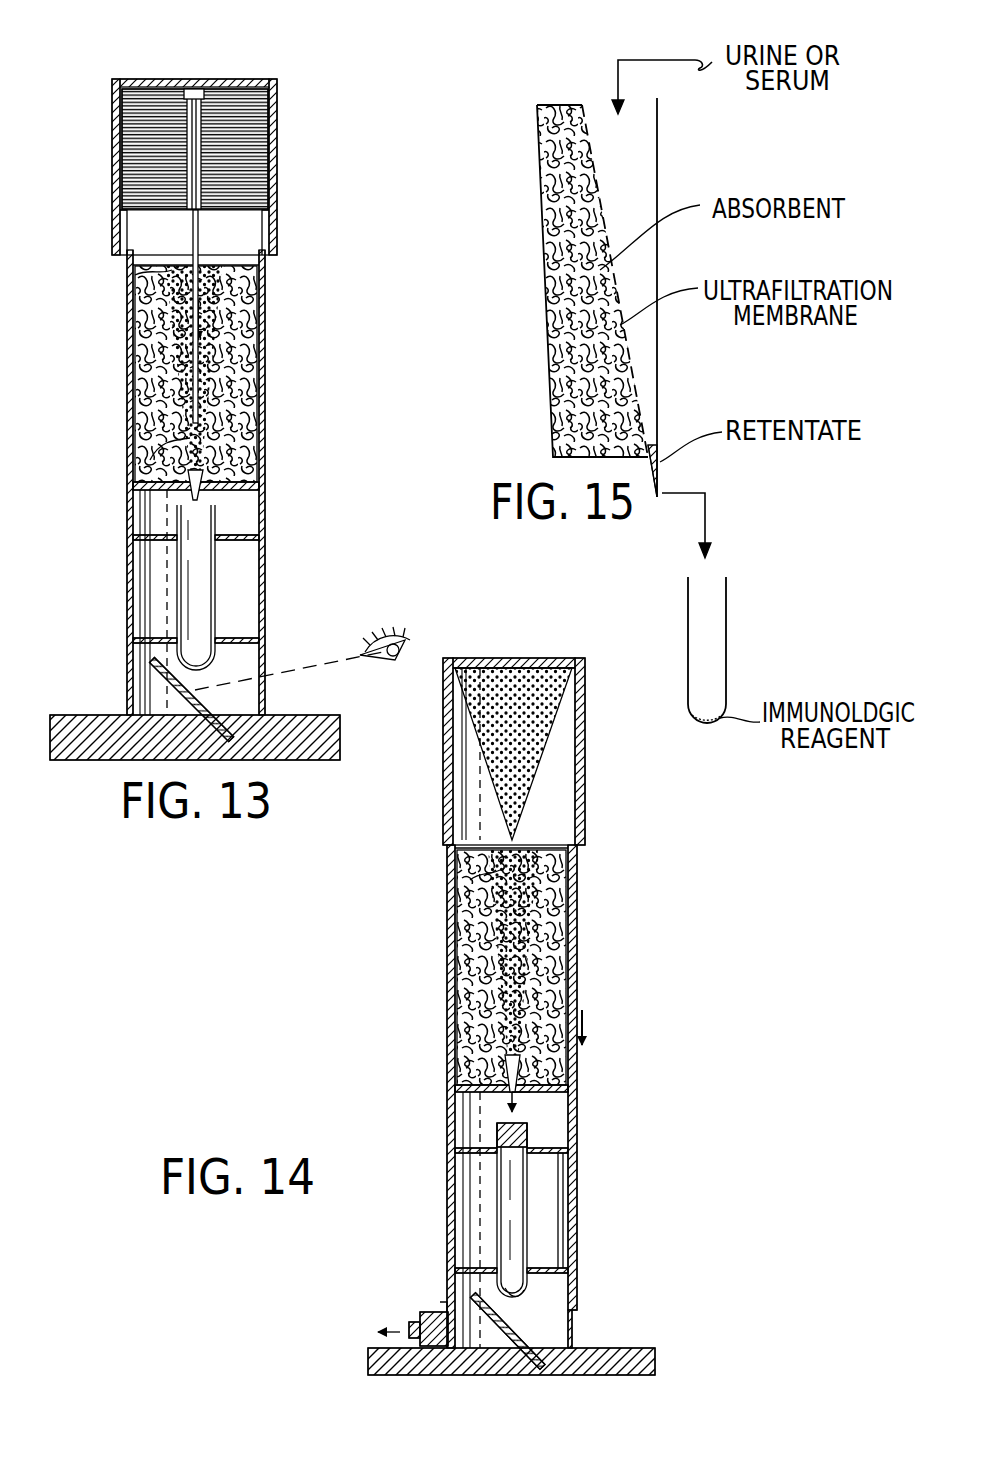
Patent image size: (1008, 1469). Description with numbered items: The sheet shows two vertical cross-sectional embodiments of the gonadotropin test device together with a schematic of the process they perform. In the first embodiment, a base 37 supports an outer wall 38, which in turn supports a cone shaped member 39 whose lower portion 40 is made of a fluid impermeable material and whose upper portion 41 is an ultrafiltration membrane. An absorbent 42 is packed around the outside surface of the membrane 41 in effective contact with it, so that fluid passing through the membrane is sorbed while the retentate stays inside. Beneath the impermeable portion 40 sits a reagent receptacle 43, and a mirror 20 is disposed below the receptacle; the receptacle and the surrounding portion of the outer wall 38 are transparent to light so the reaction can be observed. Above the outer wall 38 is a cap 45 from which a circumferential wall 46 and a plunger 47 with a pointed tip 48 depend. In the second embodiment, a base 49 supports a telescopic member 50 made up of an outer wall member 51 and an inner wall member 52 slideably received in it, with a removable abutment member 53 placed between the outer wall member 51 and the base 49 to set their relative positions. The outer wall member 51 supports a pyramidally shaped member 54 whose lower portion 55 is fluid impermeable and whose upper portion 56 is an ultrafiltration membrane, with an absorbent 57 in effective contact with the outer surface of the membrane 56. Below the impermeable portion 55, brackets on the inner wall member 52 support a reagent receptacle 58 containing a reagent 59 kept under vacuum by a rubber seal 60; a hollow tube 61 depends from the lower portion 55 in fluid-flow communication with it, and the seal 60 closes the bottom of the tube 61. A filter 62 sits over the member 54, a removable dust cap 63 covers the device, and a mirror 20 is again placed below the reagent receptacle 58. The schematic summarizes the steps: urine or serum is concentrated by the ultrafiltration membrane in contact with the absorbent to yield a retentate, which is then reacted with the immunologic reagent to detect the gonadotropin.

In FIG. 13, the mirror 20 is at (210, 720).
In FIG. 14, the mirror 20 is at (518, 1340).
In FIG. 13, the base 37 is at (108, 715).
In FIG. 13, the outer wall 38 is at (265, 470).
In FIG. 13, the cone shaped member 39 is at (218, 302).
In FIG. 13, the lower portion 40 is at (210, 500).
In FIG. 13, the upper portion 41 is at (190, 342).
In FIG. 13, the absorbent 42 is at (238, 417).
In FIG. 13, the reagent receptacle 43 is at (214, 614).
In FIG. 13, the cap 45 is at (278, 100).
In FIG. 13, the circumferential wall 46 is at (270, 185).
In FIG. 13, the plunger 47 is at (175, 257).
In FIG. 13, the pointed tip 48 is at (190, 434).
In FIG. 14, the base 49 is at (655, 1364).
In FIG. 14, the telescopic member 50 is at (438, 1234).
In FIG. 14, the outer wall member 51 is at (577, 1192).
In FIG. 14, the inner wall member 52 is at (550, 1227).
In FIG. 14, the removable abutment member 53 is at (422, 1314).
In FIG. 14, the pyramidally shaped member 54 is at (490, 868).
In FIG. 14, the lower portion 55 is at (520, 1067).
In FIG. 14, the upper portion 56 is at (535, 932).
In FIG. 14, the absorbent 57 is at (458, 910).
In FIG. 14, the reagent receptacle 58 is at (505, 1194).
In FIG. 14, the reagent 59 is at (520, 1284).
In FIG. 14, the rubber seal 60 is at (530, 1142).
In FIG. 14, the hollow tube 61 is at (510, 1106).
In FIG. 14, the filter 62 is at (536, 762).
In FIG. 14, the removable dust cap 63 is at (440, 729).